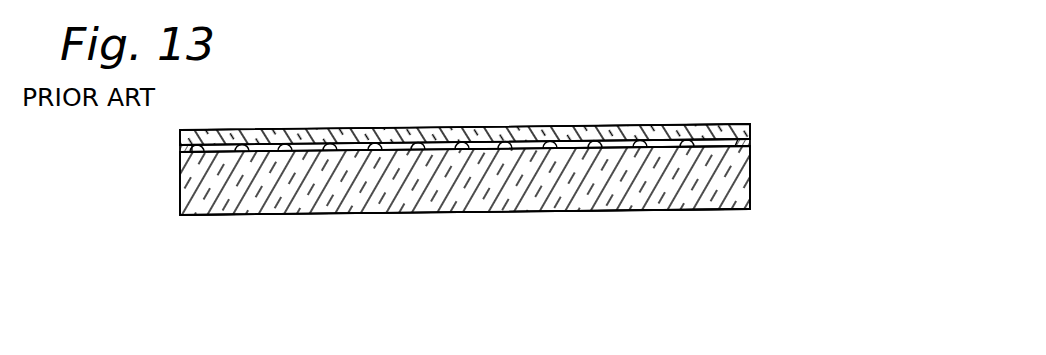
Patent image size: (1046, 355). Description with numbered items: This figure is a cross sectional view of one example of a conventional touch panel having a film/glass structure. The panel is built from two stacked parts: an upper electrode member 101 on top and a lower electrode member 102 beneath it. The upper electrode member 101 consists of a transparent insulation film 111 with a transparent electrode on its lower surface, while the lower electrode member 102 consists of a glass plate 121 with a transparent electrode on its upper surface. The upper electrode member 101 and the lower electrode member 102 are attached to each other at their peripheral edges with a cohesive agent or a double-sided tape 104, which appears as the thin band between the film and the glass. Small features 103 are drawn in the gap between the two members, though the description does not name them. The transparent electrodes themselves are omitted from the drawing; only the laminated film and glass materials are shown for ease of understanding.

The upper electrode member 101 is at (708, 112).
The transparent insulation film 111 is at (352, 128).
The double-sided tape 104 is at (194, 156).
The bumps 103 is at (415, 152).
The glass plate 121 is at (617, 197).
The lower electrode member 102 is at (729, 211).